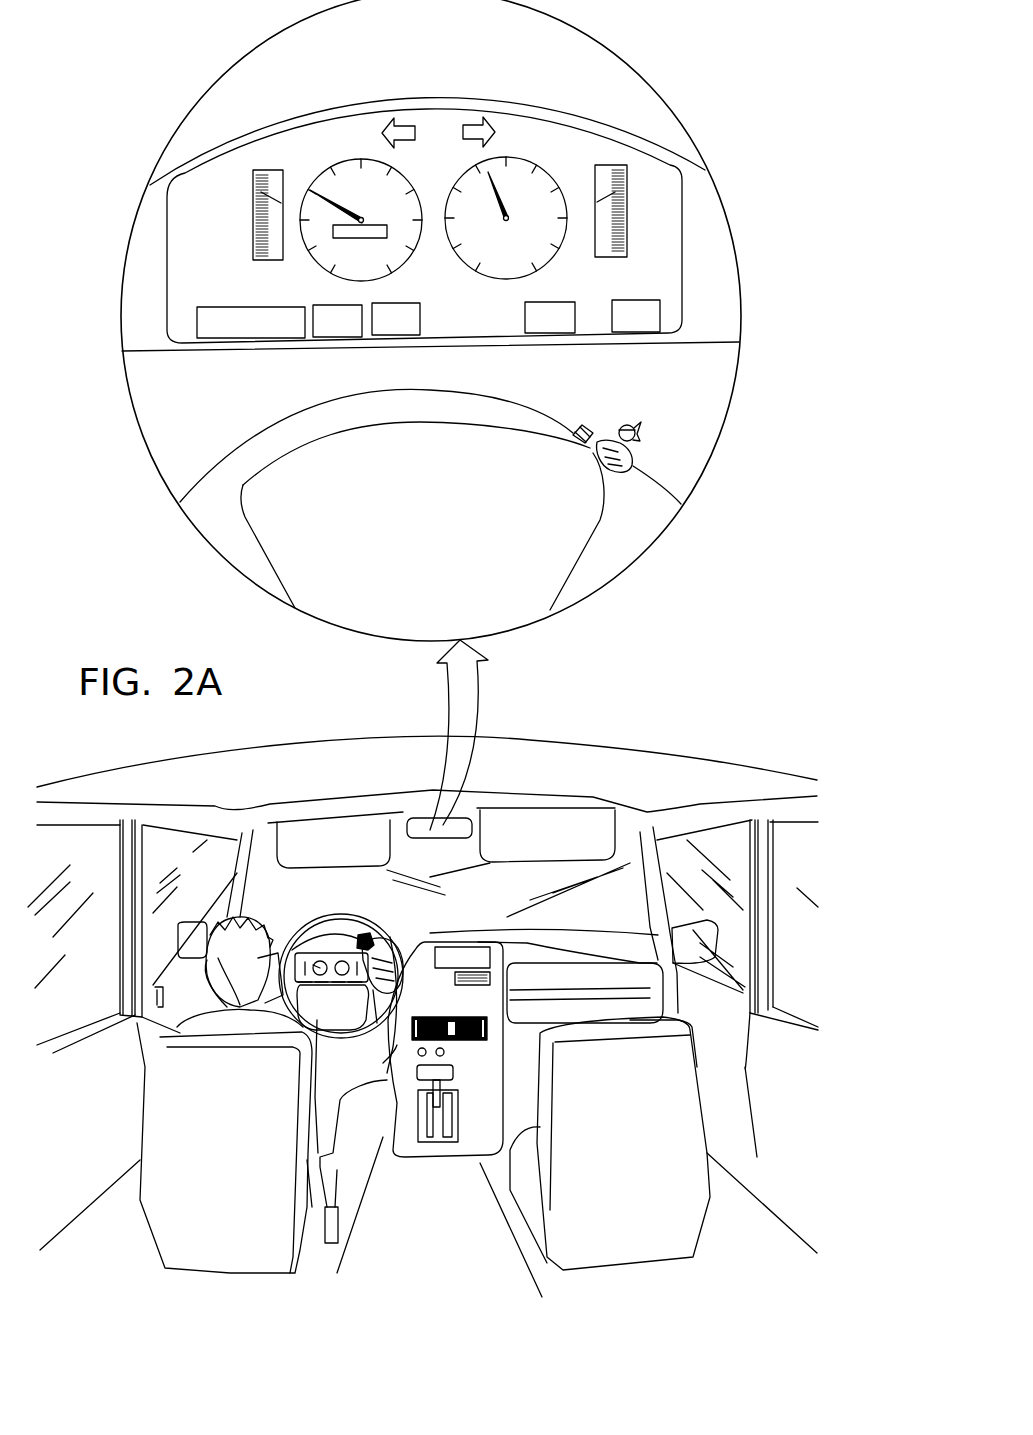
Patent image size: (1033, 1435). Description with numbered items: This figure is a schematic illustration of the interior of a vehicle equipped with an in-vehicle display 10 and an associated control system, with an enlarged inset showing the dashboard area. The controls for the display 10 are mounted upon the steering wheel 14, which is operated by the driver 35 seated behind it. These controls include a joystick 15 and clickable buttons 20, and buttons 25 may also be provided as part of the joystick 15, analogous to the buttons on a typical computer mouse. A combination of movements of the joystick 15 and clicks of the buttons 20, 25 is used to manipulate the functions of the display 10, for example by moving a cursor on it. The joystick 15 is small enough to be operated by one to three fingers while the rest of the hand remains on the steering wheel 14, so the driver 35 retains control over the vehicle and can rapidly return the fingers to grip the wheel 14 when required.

The in-vehicle display 10 is at (207, 177).
The steering wheel 14 is at (650, 530).
The joystick 15 is at (620, 429).
The clickable buttons 20 is at (575, 446).
The buttons 25 is at (378, 940).
The driver 35 is at (228, 910).